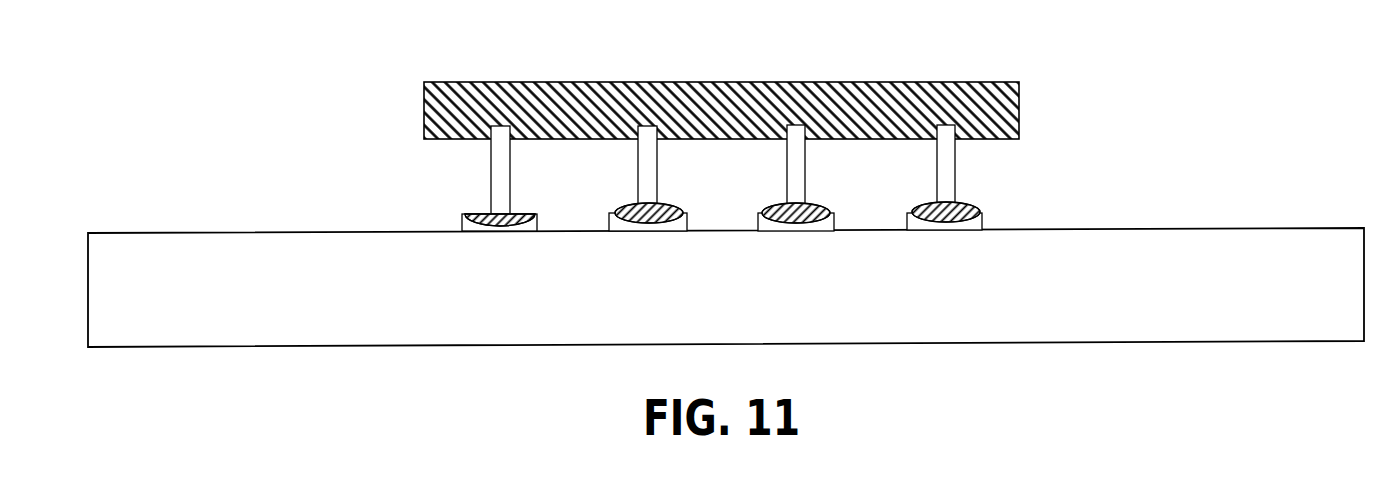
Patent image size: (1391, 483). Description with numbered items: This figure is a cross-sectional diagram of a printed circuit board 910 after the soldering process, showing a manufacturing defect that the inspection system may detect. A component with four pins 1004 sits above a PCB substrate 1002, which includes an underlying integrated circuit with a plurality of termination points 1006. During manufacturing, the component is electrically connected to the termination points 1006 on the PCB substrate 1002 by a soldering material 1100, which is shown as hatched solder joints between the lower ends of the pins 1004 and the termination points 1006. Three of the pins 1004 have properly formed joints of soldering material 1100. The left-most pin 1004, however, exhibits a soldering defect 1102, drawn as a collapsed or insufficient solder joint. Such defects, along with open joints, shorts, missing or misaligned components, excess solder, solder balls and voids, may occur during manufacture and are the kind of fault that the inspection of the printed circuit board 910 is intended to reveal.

The printed circuit board 910 is at (1163, 74).
The PCB substrate 1002 is at (1097, 230).
The pins 1004 is at (787, 167).
The termination points 1006 is at (984, 218).
The soldering material 1100 is at (928, 203).
The soldering defect 1102 is at (453, 194).